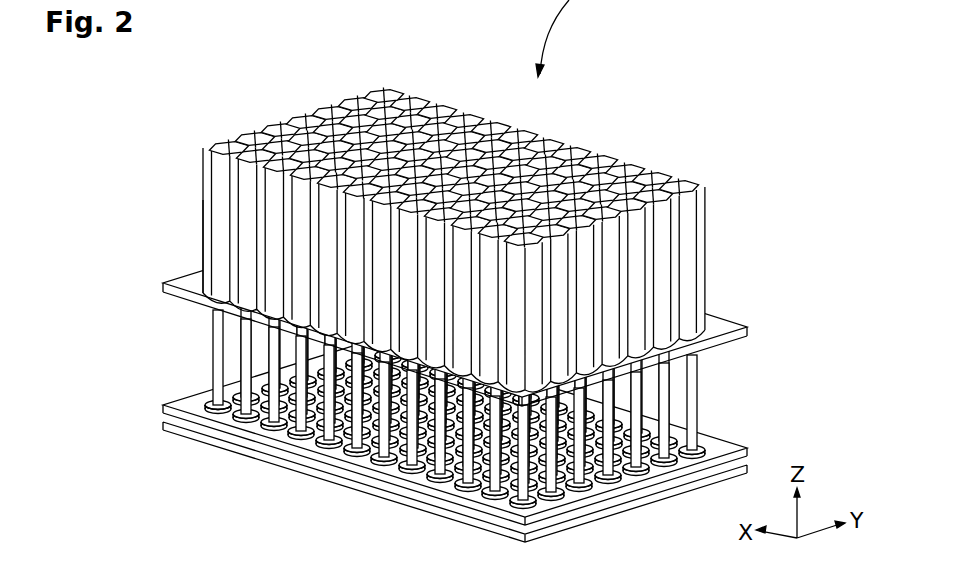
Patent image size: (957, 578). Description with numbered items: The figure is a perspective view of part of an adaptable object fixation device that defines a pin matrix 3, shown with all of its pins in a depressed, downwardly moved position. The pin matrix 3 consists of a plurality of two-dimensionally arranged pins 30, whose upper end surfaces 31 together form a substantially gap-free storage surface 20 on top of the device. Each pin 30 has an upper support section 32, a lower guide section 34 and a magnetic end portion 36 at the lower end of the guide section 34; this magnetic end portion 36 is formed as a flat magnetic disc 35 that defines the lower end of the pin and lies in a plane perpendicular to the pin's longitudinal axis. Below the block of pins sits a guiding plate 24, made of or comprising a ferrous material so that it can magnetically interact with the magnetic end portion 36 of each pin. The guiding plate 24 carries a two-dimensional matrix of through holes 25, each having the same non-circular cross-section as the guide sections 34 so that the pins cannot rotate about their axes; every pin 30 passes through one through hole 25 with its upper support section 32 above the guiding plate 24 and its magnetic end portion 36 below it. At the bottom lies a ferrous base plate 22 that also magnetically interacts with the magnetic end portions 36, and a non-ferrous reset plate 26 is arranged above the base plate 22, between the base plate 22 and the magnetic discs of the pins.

The pin matrix 3 is at (458, 198).
The storage surface 20 is at (403, 102).
The base plate 22 is at (267, 460).
The guiding plate 24 is at (200, 272).
The through holes 25 is at (217, 320).
The reset plate 26 is at (190, 403).
The pins 30 is at (272, 233).
The upper end surfaces 31 is at (692, 186).
The upper support section 32 is at (205, 252).
The guide section 34 is at (220, 362).
The magnetic disc 35 is at (218, 410).
The magnetic end portion 36 is at (200, 408).